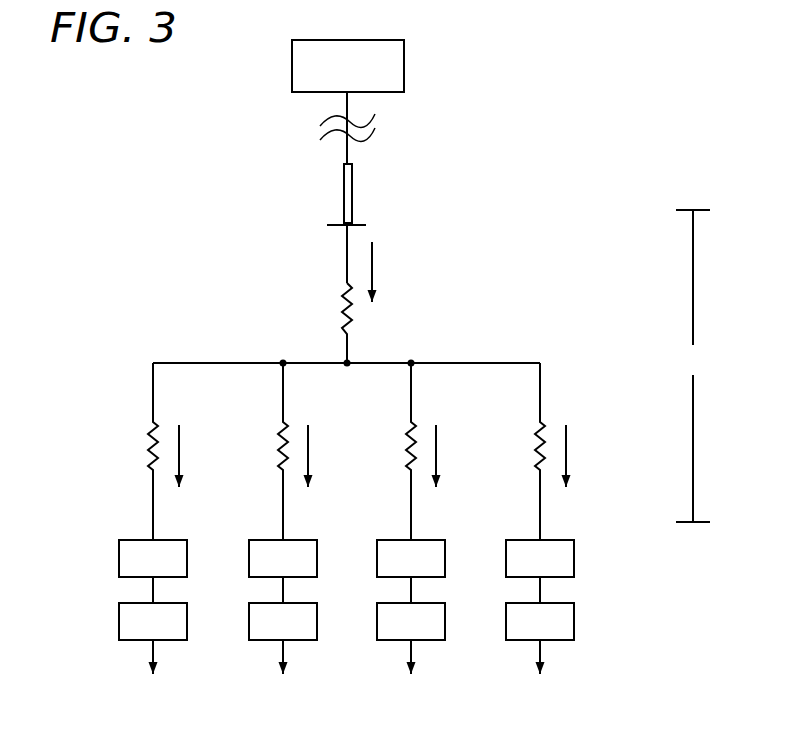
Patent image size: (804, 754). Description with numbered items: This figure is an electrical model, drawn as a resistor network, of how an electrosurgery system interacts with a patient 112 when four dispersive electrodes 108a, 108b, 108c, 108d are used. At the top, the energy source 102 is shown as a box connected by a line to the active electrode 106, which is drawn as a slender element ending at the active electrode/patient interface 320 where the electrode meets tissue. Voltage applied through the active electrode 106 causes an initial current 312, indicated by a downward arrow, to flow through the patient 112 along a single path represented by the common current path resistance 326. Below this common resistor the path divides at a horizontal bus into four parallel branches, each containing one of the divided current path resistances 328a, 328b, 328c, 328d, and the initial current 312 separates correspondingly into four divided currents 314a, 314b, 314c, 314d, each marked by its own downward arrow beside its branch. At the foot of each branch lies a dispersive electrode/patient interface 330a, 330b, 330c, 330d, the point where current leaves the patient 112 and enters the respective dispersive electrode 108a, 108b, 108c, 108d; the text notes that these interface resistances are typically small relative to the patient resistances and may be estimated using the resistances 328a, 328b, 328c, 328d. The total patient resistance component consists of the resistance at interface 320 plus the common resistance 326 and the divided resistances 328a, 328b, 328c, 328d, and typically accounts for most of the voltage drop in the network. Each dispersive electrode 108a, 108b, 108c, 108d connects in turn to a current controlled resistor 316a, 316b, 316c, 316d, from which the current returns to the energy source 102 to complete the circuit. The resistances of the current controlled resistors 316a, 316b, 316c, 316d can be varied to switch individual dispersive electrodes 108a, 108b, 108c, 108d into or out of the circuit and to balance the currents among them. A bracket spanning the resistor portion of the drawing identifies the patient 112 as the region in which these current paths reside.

The energy source 102 is at (408, 57).
The active electrode 106 is at (366, 197).
The active electrode/patient interface 320 is at (342, 222).
The common current path resistance 326 is at (332, 282).
The initial current 312 is at (374, 263).
The patient 112 is at (690, 366).
The divided current path resistance 328a is at (149, 419).
The divided current path resistance 328b is at (279, 419).
The divided current path resistance 328c is at (407, 419).
The divided current path resistance 328d is at (536, 419).
The divided current 314a is at (181, 455).
The divided current 314b is at (310, 455).
The divided current 314c is at (438, 455).
The divided current 314d is at (568, 455).
The dispersive electrode/patient interface 330a is at (158, 536).
The dispersive electrode/patient interface 330b is at (288, 536).
The dispersive electrode/patient interface 330c is at (416, 536).
The dispersive electrode/patient interface 330d is at (545, 536).
The dispersive electrode 108a is at (180, 572).
The dispersive electrode 108b is at (310, 572).
The dispersive electrode 108c is at (438, 572).
The dispersive electrode 108d is at (567, 572).
The current controlled resistor 316a is at (180, 635).
The current controlled resistor 316b is at (310, 635).
The current controlled resistor 316c is at (438, 635).
The current controlled resistor 316d is at (567, 635).